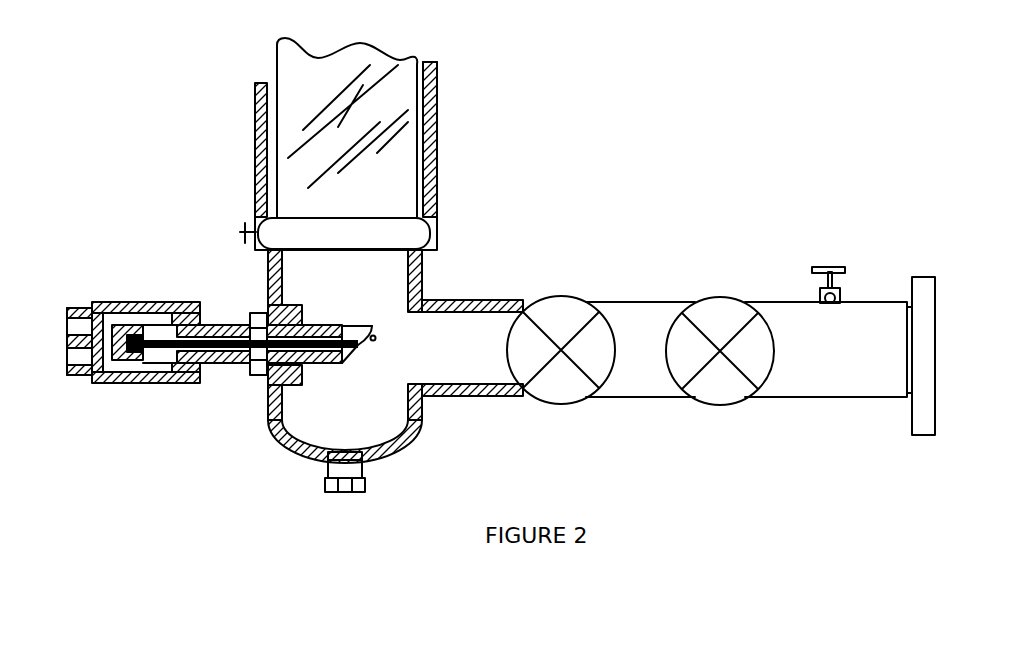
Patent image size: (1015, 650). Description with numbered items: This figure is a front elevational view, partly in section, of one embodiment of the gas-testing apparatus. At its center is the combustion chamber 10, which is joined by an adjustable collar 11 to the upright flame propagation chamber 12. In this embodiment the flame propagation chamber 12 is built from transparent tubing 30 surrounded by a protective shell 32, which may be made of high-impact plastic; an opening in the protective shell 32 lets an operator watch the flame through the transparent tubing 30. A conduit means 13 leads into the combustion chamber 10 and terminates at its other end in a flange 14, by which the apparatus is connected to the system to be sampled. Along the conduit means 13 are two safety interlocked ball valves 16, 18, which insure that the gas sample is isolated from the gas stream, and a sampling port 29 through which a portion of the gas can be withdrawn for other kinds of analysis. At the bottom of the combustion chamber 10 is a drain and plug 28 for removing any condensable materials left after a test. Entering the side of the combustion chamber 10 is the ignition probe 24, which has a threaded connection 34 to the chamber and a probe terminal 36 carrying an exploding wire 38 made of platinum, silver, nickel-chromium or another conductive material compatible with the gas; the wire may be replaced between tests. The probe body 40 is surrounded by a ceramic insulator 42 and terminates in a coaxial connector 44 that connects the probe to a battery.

The combustion chamber 10 is at (389, 297).
The adjustable collar 11 is at (242, 232).
The flame propagation chamber 12 is at (353, 226).
The conduit means 13 is at (638, 303).
The flange 14 is at (927, 318).
The safety interlocked ball valve 16 is at (563, 297).
The safety interlocked ball valve 18 is at (727, 300).
The ignition probe 24 is at (323, 374).
The drain and plug 28 is at (370, 468).
The sampling port 29 is at (842, 268).
The transparent tubing 30 is at (428, 74).
The protective shell 32 is at (436, 150).
The threaded connection 34 is at (292, 301).
The probe terminal 36 is at (368, 354).
The exploding wire 38 is at (375, 338).
The probe body 40 is at (220, 340).
The ceramic insulator 42 is at (340, 363).
The coaxial connector 44 is at (163, 389).